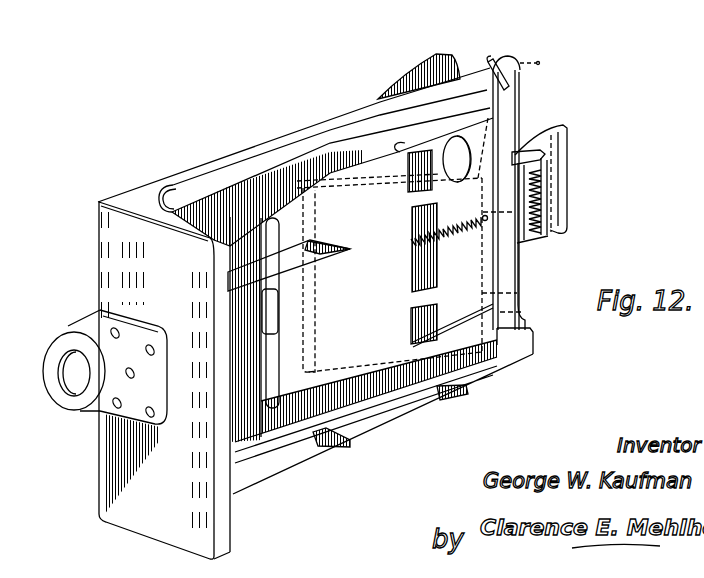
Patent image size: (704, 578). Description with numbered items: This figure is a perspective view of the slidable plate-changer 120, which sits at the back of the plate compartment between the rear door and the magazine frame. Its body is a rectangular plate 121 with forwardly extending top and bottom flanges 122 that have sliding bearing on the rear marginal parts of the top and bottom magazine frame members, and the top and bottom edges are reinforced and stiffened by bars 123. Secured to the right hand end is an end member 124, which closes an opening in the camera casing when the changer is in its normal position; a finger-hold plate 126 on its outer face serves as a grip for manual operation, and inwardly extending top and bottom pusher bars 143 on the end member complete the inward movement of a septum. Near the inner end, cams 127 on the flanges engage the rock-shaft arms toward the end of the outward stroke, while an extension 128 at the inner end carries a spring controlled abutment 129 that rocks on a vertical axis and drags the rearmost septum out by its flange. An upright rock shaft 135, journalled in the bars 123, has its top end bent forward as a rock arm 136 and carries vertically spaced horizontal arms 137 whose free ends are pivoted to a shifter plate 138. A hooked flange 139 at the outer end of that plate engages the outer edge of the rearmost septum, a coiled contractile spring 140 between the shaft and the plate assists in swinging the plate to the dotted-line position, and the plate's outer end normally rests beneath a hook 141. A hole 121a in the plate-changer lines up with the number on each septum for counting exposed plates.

The plate-changer 120 is at (286, 131).
The rectangular plate 121 is at (353, 390).
The hole 121a is at (460, 182).
The top and bottom flanges 122 is at (203, 180).
The bars 123 is at (240, 173).
The end member 124 is at (130, 505).
The finger-hold plate 126 is at (80, 411).
The cams 127 is at (441, 58).
The extension 128 is at (561, 182).
The spring controlled abutment 129 is at (531, 247).
The upright rock shaft 135 is at (503, 128).
The rock arm 136 is at (515, 85).
The horizontal arms 137 is at (411, 150).
The shifter plate 138 is at (410, 273).
The hooked flange 139 is at (280, 351).
The coiled contractile spring 140 is at (411, 242).
The hook 141 is at (279, 312).
The pusher bars 143 is at (330, 243).